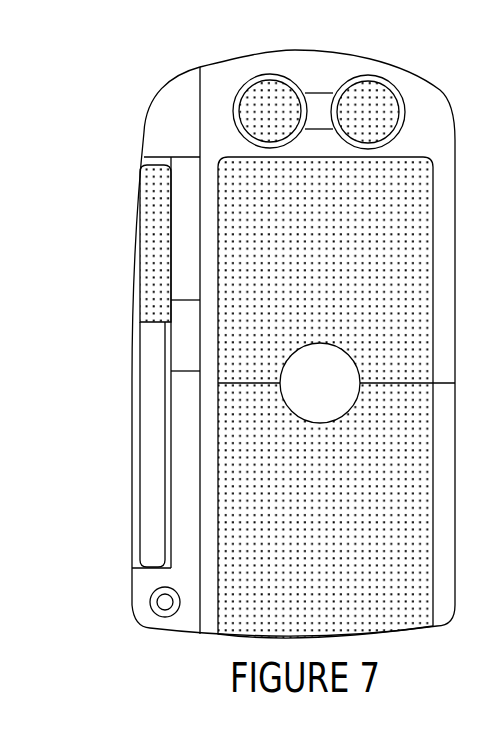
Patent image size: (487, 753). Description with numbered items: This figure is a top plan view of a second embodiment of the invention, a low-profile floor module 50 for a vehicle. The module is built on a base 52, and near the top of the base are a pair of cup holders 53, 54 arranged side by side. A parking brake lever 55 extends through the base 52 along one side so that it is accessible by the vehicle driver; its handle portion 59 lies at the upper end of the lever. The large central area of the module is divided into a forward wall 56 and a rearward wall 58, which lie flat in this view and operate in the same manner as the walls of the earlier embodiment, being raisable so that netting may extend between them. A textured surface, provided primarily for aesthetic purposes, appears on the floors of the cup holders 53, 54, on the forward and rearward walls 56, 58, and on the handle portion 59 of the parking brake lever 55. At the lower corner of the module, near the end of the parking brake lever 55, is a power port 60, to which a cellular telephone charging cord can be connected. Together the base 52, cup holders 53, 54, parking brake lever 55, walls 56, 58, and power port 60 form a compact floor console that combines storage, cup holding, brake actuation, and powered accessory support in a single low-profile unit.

The low-profile floor module 50 is at (282, 343).
The base 52 is at (433, 118).
The cup holder 53 is at (379, 77).
The cup holder 54 is at (246, 76).
The parking brake lever 55 is at (142, 484).
The forward wall 56 is at (334, 296).
The rearward wall 58 is at (329, 526).
The handle portion 59 is at (150, 170).
The power port 60 is at (160, 607).